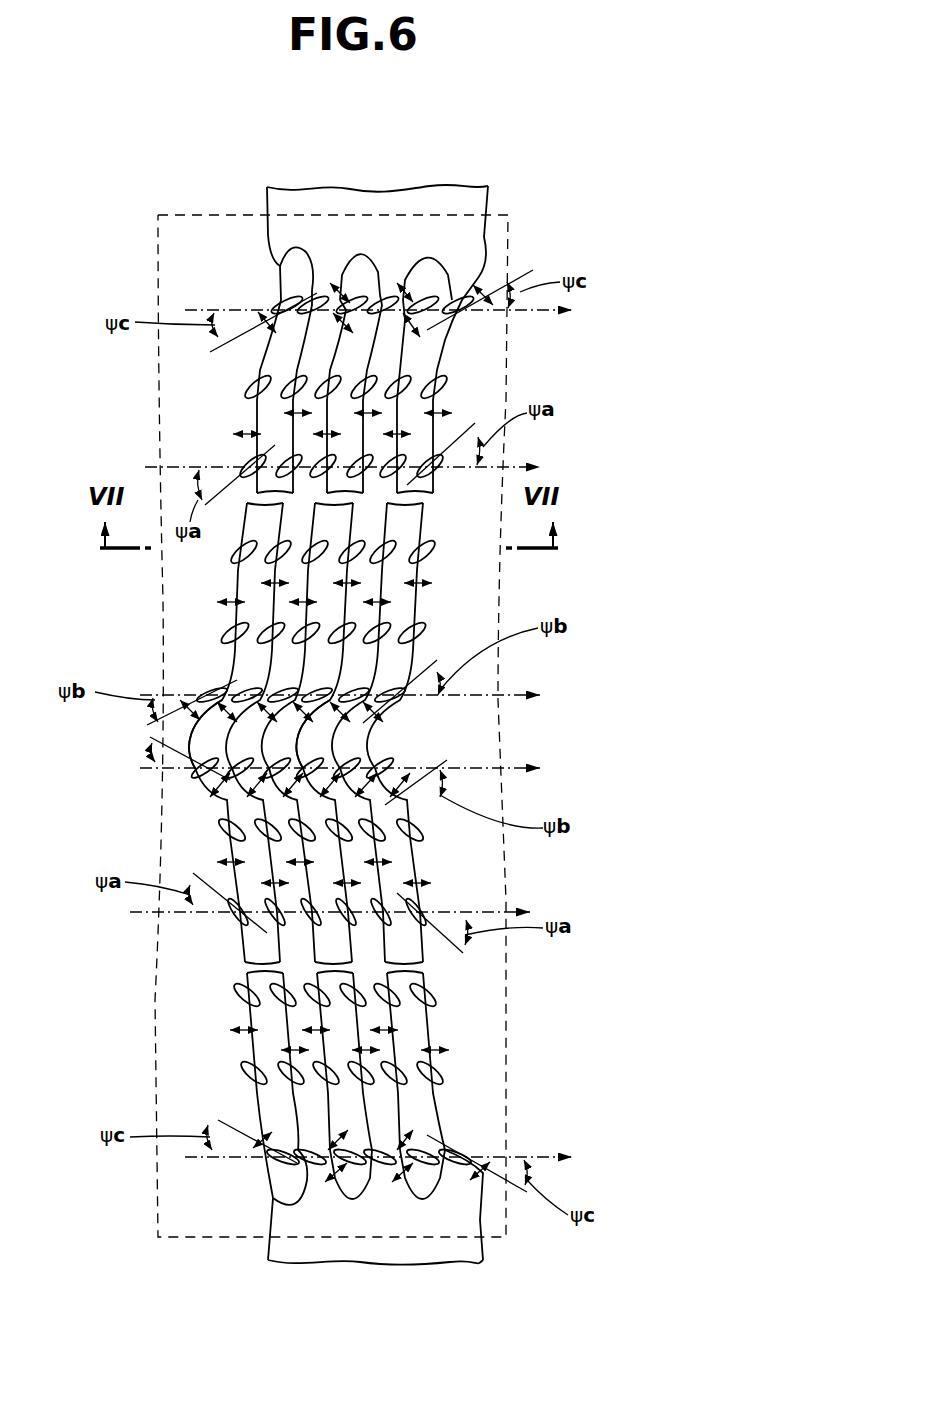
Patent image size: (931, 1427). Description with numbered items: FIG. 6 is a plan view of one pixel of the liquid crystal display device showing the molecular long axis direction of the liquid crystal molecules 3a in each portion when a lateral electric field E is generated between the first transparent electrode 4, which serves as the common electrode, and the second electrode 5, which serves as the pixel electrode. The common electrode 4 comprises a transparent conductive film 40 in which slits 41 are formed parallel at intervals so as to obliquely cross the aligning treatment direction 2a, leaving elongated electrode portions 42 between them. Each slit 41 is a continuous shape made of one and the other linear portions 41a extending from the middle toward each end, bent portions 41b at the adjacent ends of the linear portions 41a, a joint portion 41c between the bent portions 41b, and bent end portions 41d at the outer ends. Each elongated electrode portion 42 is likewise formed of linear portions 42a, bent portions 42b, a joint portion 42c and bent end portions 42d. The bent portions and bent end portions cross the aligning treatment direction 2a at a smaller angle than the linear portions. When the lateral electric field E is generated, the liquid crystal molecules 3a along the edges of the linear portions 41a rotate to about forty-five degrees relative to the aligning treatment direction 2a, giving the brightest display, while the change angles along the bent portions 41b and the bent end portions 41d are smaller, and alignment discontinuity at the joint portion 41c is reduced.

The aligning treatment direction 2a is at (230, 308).
The liquid crystal molecules 3a is at (440, 393).
The first transparent electrode 4 is at (346, 185).
The second electrode 5 is at (188, 213).
The transparent conductive film 40 is at (423, 200).
The slit 41 is at (238, 953).
The elongated electrode portion 42 is at (281, 943).
The linear portion 41a is at (300, 378).
The linear portion 42a is at (265, 413).
The bent portion 41b is at (237, 680).
The bent portion 42b is at (363, 667).
The joint portion 41c is at (210, 765).
The joint portion 42c is at (347, 733).
The bent end portion 41d is at (350, 267).
The bent end portion 42d is at (393, 290).
The lateral electric field E is at (238, 435).